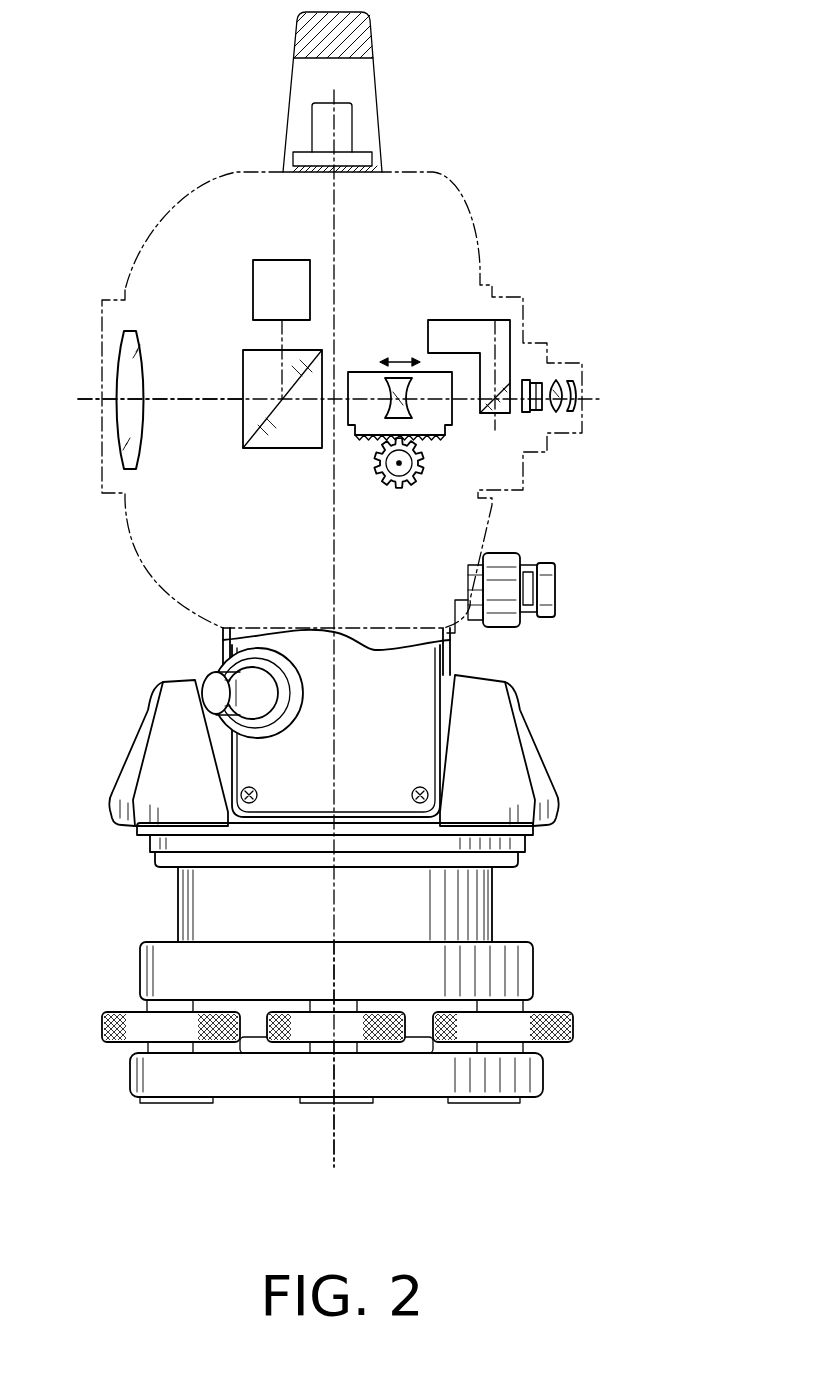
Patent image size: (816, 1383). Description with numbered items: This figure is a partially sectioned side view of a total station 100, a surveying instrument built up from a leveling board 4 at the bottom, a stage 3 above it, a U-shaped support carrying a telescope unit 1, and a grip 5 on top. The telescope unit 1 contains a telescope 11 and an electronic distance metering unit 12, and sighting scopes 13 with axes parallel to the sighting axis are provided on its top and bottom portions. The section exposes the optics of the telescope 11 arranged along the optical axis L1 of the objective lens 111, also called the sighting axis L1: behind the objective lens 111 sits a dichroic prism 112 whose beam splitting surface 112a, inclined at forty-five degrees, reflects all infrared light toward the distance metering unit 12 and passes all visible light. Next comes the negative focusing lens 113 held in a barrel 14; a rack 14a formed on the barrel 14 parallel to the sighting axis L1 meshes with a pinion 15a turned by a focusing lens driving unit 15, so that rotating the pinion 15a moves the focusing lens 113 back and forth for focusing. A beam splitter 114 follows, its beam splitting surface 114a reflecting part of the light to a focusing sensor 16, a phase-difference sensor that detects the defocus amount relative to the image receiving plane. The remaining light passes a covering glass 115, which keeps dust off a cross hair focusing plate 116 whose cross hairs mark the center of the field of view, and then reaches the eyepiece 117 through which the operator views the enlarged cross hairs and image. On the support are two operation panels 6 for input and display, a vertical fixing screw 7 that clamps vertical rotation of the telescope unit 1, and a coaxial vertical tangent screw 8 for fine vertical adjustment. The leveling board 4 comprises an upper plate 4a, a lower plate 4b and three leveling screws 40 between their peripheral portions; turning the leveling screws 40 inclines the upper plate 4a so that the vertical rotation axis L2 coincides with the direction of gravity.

The total station 100 is at (640, 108).
The telescope unit 1 is at (185, 197).
The grip 5 is at (300, 35).
The sighting scope 13 is at (362, 150).
The telescope 11 is at (228, 508).
The optical axis (sighting axis) L1 is at (183, 400).
The objective lens 111 is at (127, 373).
The electronic distance metering unit 12 is at (278, 266).
The dichroic prism 112 is at (243, 370).
The beam splitting surface 112a is at (280, 412).
The focusing lens 113 is at (385, 390).
The barrel 14 is at (420, 370).
The rack 14a is at (428, 438).
The focusing lens driving unit 15 is at (400, 487).
The pinion 15a is at (385, 480).
The focusing sensor 16 is at (498, 318).
The beam splitter 114 is at (500, 418).
The beam splitting surface 114a is at (478, 410).
The covering glass 115 is at (530, 413).
The cross hair focusing plate 116 is at (538, 380).
The eyepiece 117 is at (558, 380).
The vertical fixing screw 7 is at (550, 588).
The vertical tangent screw 8 is at (507, 626).
The operation panel 6 is at (135, 750).
The stage 3 is at (473, 907).
The leveling board 4 is at (73, 933).
The upper plate 4a is at (147, 972).
The lower plate 4b is at (130, 1083).
The leveling screw 40 is at (187, 1028).
The vertical rotation axis L2 is at (340, 1133).